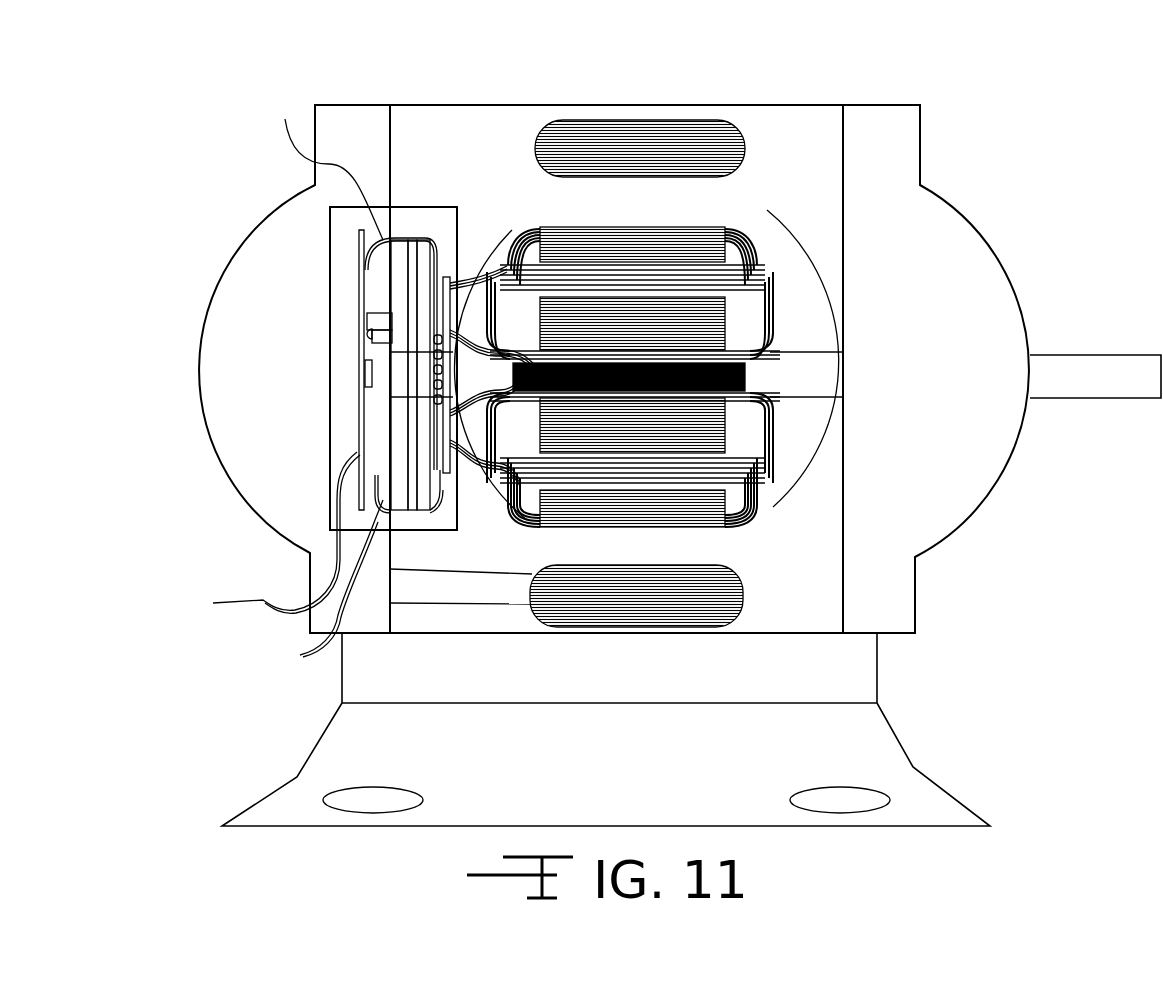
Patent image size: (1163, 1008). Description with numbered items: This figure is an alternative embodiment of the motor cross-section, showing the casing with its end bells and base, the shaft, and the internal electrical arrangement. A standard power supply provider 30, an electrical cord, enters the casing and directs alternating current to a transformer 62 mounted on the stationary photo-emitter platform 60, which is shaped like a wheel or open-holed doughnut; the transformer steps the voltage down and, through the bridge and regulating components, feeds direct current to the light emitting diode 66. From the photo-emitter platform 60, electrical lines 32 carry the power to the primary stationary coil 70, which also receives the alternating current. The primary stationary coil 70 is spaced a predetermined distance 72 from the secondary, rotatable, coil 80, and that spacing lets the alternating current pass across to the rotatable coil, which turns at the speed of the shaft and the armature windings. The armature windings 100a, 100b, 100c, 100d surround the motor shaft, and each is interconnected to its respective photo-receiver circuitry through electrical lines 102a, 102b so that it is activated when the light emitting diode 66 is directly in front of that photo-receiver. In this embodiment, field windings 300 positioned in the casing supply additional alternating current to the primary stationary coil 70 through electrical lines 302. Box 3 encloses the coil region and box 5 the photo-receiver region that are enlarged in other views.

The box 3 is at (330, 240).
The box 5 is at (457, 532).
The power supply provider 30 is at (271, 537).
The electrical lines 32 is at (325, 383).
The photo-emitter platform 60 is at (362, 233).
The transformer 62 is at (392, 317).
The light emitting diode 66 is at (367, 335).
The primary stationary coil 70 is at (392, 237).
The predetermined distance 72 is at (400, 226).
The secondary, rotatable, coil 80 is at (428, 226).
The armature winding 100a is at (513, 225).
The armature winding 100b is at (745, 270).
The armature winding 100c is at (775, 425).
The armature winding 100d is at (763, 503).
The electrical lines 102a is at (455, 278).
The electrical lines 102b is at (465, 270).
The field windings 300 is at (745, 140).
The electrical lines 302 is at (423, 605).